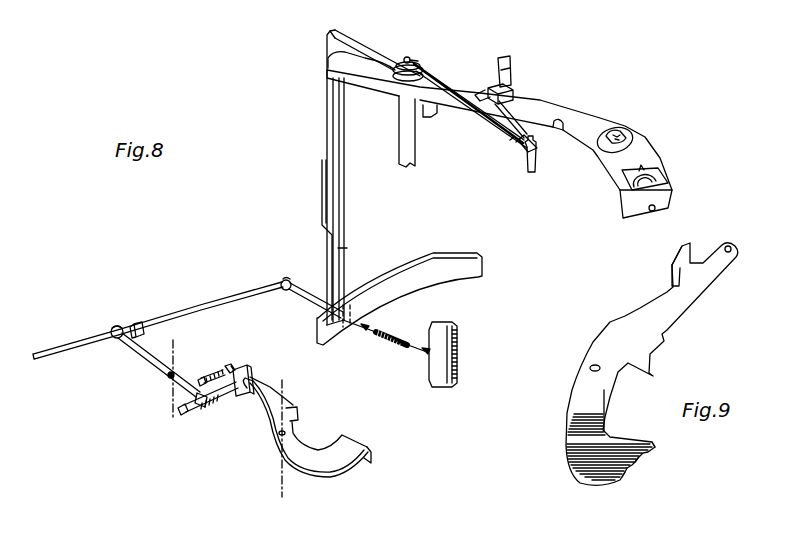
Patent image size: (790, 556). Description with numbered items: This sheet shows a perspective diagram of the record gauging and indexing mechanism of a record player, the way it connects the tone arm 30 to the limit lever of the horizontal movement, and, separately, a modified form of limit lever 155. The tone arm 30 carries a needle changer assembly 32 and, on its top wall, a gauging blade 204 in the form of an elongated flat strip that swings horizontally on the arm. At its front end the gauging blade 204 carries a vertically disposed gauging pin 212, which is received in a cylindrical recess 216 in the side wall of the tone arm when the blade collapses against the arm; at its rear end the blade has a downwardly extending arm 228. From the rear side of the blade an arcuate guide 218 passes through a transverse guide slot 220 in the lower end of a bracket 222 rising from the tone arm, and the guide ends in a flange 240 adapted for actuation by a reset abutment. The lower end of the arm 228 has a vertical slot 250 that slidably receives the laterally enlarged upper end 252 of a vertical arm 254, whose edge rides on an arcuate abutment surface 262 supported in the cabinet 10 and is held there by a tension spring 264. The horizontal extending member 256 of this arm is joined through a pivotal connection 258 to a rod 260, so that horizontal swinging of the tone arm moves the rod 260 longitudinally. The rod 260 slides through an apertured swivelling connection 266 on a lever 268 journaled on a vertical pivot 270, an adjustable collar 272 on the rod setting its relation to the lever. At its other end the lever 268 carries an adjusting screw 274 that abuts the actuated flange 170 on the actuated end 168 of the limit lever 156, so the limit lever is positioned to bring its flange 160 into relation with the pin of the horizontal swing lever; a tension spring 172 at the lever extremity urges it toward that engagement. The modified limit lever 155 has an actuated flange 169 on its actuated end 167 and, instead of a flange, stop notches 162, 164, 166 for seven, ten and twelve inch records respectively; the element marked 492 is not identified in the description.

In FIG. 8, the cabinet 10 is at (80, 13).
In FIG. 8, the gauging blade 204 is at (368, 53).
In FIG. 8, the downwardly extending arm 228 is at (333, 45).
In FIG. 8, the vertical slot 250 is at (332, 101).
In FIG. 8, the transverse guide slot 220 is at (496, 88).
In FIG. 8, the flange 240 is at (503, 57).
In FIG. 8, the arcuate guide 218 is at (510, 74).
In FIG. 8, the bracket 222 is at (514, 95).
In FIG. 8, the tone arm 30 is at (567, 116).
In FIG. 8, the needle changer assembly 32 is at (668, 162).
In FIG. 8, the rod 492 is at (452, 97).
In FIG. 8, the gauging pin 212 is at (527, 166).
In FIG. 8, the cylindrical recess 216 is at (557, 132).
In FIG. 8, the laterally enlarged upper end 252 is at (340, 196).
In FIG. 8, the vertical arm 254 is at (340, 248).
In FIG. 8, the pivotal connection 258 is at (287, 279).
In FIG. 8, the horizontal extending member 256 is at (307, 298).
In FIG. 8, the arcuate guide or abutment surface 262 is at (428, 268).
In FIG. 8, the tension spring 264 is at (388, 341).
In FIG. 8, the rod 260 is at (203, 307).
In FIG. 8, the apertured swivelling connection 266 is at (115, 326).
In FIG. 8, the adjustable collar 272 is at (141, 323).
In FIG. 8, the lever 268 is at (137, 343).
In FIG. 8, the vertical pivot 270 is at (168, 378).
In FIG. 8, the tension spring 172 is at (207, 372).
In FIG. 8, the actuated flange 170 is at (246, 371).
In FIG. 8, the actuated end 168 is at (263, 389).
In FIG. 8, the adjusting screw 274 is at (227, 401).
In FIG. 8, the limit lever 156 is at (327, 462).
In FIG. 8, the flange 160 is at (365, 464).
In FIG. 9, the actuated flange 169 is at (675, 263).
In FIG. 9, the modified limit lever 155 is at (628, 335).
In FIG. 9, the actuated end 167 is at (675, 303).
In FIG. 9, the stop notch 162 is at (657, 448).
In FIG. 9, the stop notch 164 is at (635, 465).
In FIG. 9, the stop notch 166 is at (622, 478).